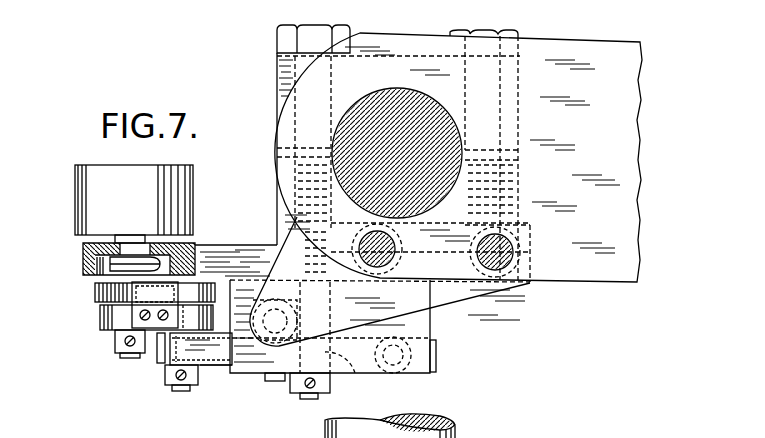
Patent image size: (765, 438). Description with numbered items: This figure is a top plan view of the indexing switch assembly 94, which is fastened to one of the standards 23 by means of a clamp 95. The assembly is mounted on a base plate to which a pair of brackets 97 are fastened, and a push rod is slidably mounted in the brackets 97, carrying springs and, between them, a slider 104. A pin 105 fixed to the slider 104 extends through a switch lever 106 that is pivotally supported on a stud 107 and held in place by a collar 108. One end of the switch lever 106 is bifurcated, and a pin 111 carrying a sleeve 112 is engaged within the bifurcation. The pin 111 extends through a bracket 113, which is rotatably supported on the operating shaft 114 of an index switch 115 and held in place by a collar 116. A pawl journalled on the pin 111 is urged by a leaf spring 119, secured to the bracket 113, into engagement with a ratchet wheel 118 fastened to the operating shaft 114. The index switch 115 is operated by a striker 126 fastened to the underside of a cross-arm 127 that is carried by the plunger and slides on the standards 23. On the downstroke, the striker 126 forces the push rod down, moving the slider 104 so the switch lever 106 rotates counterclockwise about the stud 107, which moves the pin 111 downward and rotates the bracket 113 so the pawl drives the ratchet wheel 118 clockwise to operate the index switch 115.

The standard 23 is at (383, 98).
The indexing switch assembly 94 is at (230, 402).
The clamp 95 is at (280, 77).
The bracket 97 is at (238, 246).
The slider 104 is at (258, 327).
The pin 105 is at (273, 385).
The switch lever 106 is at (222, 365).
The stud 107 is at (358, 378).
The collar 108 is at (320, 396).
The pin 111 is at (183, 386).
The sleeve 112 is at (160, 354).
The bracket 113 is at (100, 320).
The operating shaft 114 is at (124, 356).
The index switch 115 is at (76, 199).
The collar 116 is at (115, 342).
The ratchet wheel 118 is at (95, 296).
The leaf spring 119 is at (207, 292).
The striker 126 is at (408, 303).
The cross-arm 127 is at (600, 276).